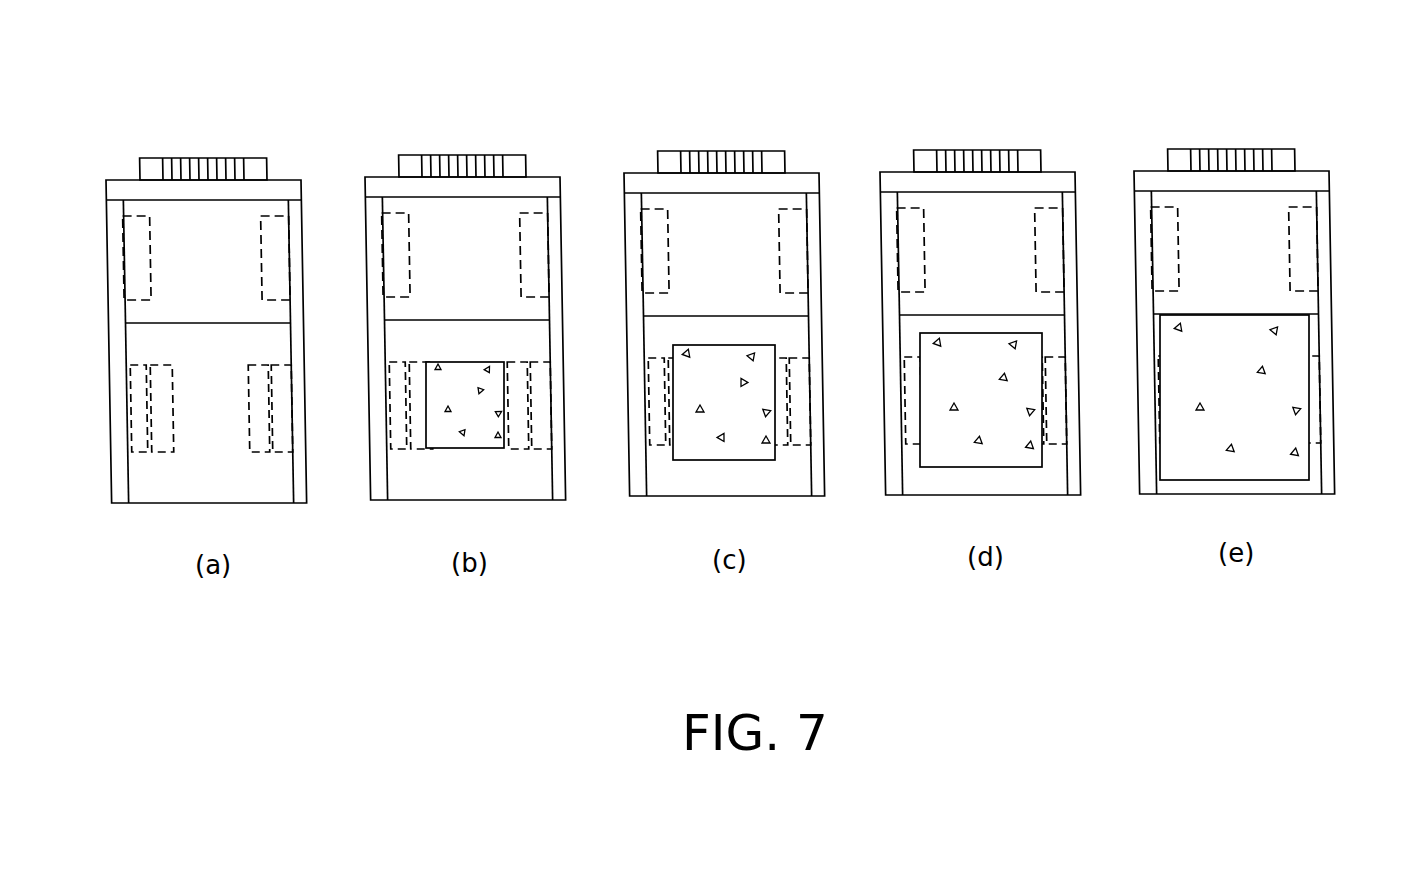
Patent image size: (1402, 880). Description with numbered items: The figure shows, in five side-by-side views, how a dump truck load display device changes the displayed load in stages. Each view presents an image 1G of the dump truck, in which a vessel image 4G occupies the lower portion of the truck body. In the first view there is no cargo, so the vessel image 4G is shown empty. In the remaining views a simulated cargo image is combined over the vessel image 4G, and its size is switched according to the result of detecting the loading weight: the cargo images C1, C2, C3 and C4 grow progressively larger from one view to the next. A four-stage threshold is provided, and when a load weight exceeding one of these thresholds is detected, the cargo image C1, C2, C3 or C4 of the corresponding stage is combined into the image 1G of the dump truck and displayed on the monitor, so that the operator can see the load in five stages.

The image of the dump truck 1G is at (228, 126).
The vessel image 4G is at (207, 470).
The cargo image C1 is at (440, 407).
The cargo image C2 is at (698, 404).
The cargo image C3 is at (955, 402).
The cargo image C4 is at (1208, 397).